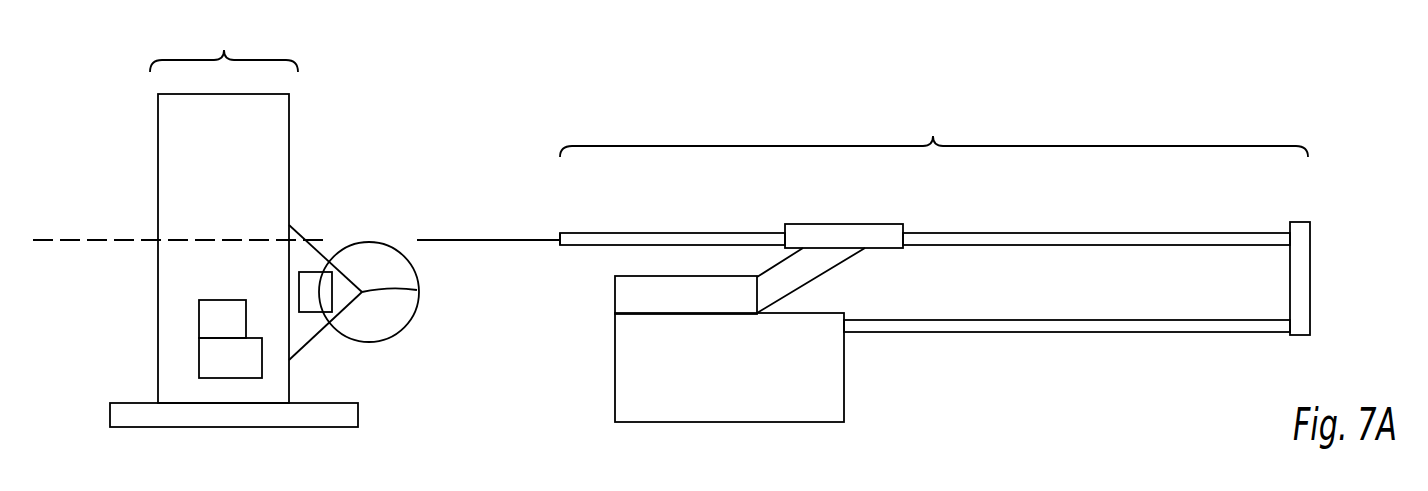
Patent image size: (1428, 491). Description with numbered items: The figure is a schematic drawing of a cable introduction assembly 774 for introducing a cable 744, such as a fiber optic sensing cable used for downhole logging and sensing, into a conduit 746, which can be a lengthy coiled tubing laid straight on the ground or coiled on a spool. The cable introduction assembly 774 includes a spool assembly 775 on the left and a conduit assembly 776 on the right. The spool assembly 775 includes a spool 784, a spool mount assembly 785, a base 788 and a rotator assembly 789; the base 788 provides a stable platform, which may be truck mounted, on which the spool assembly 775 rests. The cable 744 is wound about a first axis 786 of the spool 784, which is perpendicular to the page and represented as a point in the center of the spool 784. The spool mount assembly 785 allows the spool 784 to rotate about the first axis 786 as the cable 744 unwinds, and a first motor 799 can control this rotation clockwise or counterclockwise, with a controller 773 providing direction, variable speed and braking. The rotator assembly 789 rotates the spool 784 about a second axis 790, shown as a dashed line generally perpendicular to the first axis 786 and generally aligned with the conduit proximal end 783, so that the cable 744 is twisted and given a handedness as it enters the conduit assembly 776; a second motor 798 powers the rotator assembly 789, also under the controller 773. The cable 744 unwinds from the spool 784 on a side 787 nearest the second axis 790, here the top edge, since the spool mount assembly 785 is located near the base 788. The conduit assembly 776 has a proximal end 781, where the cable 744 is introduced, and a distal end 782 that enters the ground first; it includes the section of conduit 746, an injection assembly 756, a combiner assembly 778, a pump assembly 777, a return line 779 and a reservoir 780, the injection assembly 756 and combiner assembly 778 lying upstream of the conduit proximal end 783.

The cable introduction assembly 774 is at (518, 103).
The spool assembly 775 is at (224, 47).
The conduit assembly 776 is at (934, 133).
The cable 744 is at (462, 234).
The conduit 746 is at (1097, 233).
The injection assembly 756 is at (675, 233).
The controller 773 is at (211, 321).
The pump assembly 777 is at (617, 292).
The combiner assembly 778 is at (859, 224).
The return line 779 is at (1097, 320).
The reservoir 780 is at (618, 368).
The proximal end 781 is at (560, 233).
The distal end 782 is at (1290, 228).
The conduit proximal end 783 is at (905, 228).
The spool 784 is at (345, 257).
The spool mount assembly 785 is at (305, 252).
The first axis 786 is at (417, 290).
The side 787 is at (370, 238).
The base 788 is at (234, 427).
The rotator assembly 789 is at (166, 143).
The second axis 790 is at (88, 239).
The second motor 798 is at (211, 360).
The first motor 799 is at (310, 303).